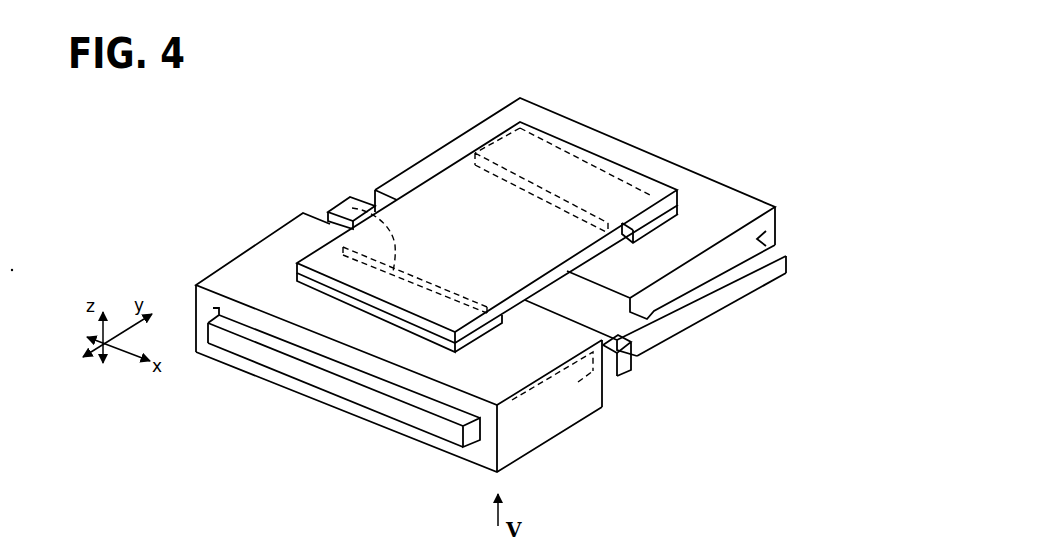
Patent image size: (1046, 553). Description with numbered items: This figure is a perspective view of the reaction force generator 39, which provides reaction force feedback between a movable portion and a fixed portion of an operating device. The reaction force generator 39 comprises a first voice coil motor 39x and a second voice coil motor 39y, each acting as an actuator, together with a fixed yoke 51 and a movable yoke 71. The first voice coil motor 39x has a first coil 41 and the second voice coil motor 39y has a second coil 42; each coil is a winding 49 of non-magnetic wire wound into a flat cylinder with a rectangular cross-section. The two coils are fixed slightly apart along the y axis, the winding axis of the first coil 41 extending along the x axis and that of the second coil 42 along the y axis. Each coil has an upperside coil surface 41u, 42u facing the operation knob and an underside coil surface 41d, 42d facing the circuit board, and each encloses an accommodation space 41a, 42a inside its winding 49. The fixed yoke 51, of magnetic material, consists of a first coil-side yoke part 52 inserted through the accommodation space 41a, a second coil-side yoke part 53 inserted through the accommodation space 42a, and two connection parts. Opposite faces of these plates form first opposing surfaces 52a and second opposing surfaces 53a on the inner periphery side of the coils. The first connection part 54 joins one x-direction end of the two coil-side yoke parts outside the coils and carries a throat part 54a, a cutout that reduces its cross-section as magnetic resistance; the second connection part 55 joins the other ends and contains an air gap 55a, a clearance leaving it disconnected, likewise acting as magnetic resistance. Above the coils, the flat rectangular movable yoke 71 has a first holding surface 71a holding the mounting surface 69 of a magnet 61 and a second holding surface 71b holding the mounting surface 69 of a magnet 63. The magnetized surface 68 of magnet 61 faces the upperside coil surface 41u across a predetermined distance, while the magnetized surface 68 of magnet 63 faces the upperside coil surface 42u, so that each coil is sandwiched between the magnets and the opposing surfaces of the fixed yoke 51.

The reaction force generator 39 is at (363, 128).
The first voice coil motor 39x is at (676, 152).
The second voice coil motor 39y is at (300, 404).
The first coil 41 is at (732, 214).
The upperside coil surface 41u is at (697, 180).
The accommodation space 41a is at (762, 237).
The underside coil surface 41d is at (752, 290).
The second coil 42 is at (265, 237).
The upperside coil surface 42u is at (225, 278).
The accommodation space 42a is at (200, 305).
The underside coil surface 42d is at (537, 450).
The winding 49 is at (493, 301).
The fixed yoke 51 is at (225, 340).
The first coil-side yoke part 52 is at (787, 259).
The first opposing surfaces 52a is at (710, 279).
The second coil-side yoke part 53 is at (463, 445).
The second opposing surfaces 53a is at (410, 400).
The first connection part 54 is at (360, 190).
The throat part 54a is at (320, 212).
The second connection part 55 is at (633, 363).
The air gap 55a is at (632, 368).
The magnet 61 is at (682, 210).
The magnet 63 is at (320, 291).
The magnetized surface 68 is at (413, 340).
The mounting surface 69 is at (352, 208).
The movable yoke 71 is at (527, 155).
The first holding surface 71a is at (608, 233).
The second holding surface 71b is at (578, 382).